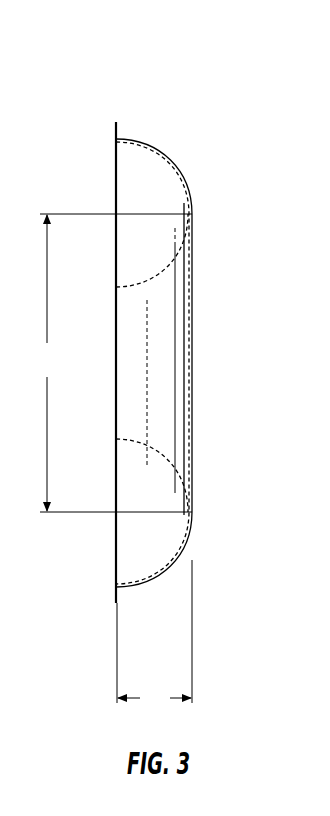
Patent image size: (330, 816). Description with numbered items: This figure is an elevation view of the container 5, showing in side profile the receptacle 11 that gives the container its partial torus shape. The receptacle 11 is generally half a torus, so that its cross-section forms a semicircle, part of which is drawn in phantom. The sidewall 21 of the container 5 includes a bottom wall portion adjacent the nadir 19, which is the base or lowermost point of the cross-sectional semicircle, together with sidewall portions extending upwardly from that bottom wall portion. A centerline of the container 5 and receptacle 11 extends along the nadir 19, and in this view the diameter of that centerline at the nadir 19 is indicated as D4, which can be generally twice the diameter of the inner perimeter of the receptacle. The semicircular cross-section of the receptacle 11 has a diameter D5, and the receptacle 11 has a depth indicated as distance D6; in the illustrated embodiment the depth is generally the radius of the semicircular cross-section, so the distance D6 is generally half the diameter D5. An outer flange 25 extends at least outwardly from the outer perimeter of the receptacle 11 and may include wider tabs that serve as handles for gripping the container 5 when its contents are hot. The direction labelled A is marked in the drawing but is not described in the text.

The container 5 is at (105, 112).
The receptacle 11 is at (96, 543).
The outer flange 25 is at (116, 597).
The diameter of semicircular cross-section D5 is at (181, 165).
The nadir 19 is at (190, 220).
The sidewall 21 is at (182, 295).
The axis A is at (202, 366).
The diameter of centerline at nadir D4 is at (99, 366).
The depth of receptacle D6 is at (154, 635).